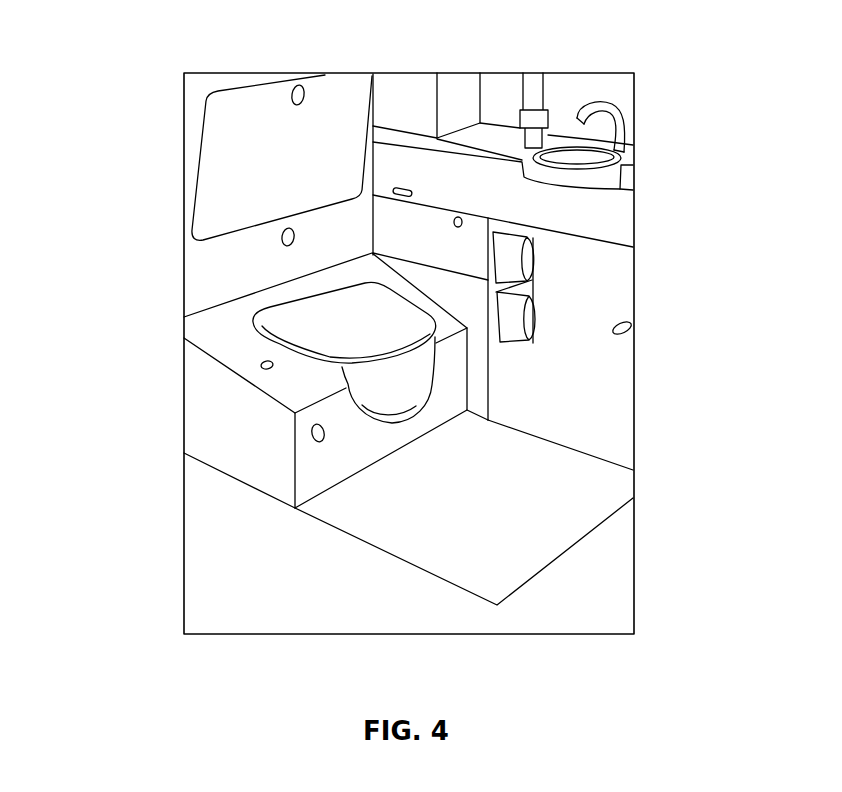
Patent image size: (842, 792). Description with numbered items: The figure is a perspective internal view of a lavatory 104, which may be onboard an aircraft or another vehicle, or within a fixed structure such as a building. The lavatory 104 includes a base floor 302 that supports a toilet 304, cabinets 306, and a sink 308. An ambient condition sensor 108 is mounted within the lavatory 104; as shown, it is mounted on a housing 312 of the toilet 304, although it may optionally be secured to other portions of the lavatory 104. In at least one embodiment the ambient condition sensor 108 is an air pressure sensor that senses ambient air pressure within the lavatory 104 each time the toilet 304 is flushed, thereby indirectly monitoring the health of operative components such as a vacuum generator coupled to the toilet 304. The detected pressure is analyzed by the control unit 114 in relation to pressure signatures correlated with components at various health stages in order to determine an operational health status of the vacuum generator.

The lavatory 104 is at (138, 87).
The control unit 114 is at (457, 190).
The sink 308 is at (562, 158).
The toilet 304 is at (318, 322).
The cabinets 306 is at (588, 286).
The ambient condition sensor 108 is at (261, 367).
The housing 312 is at (261, 451).
The base floor 302 is at (522, 502).